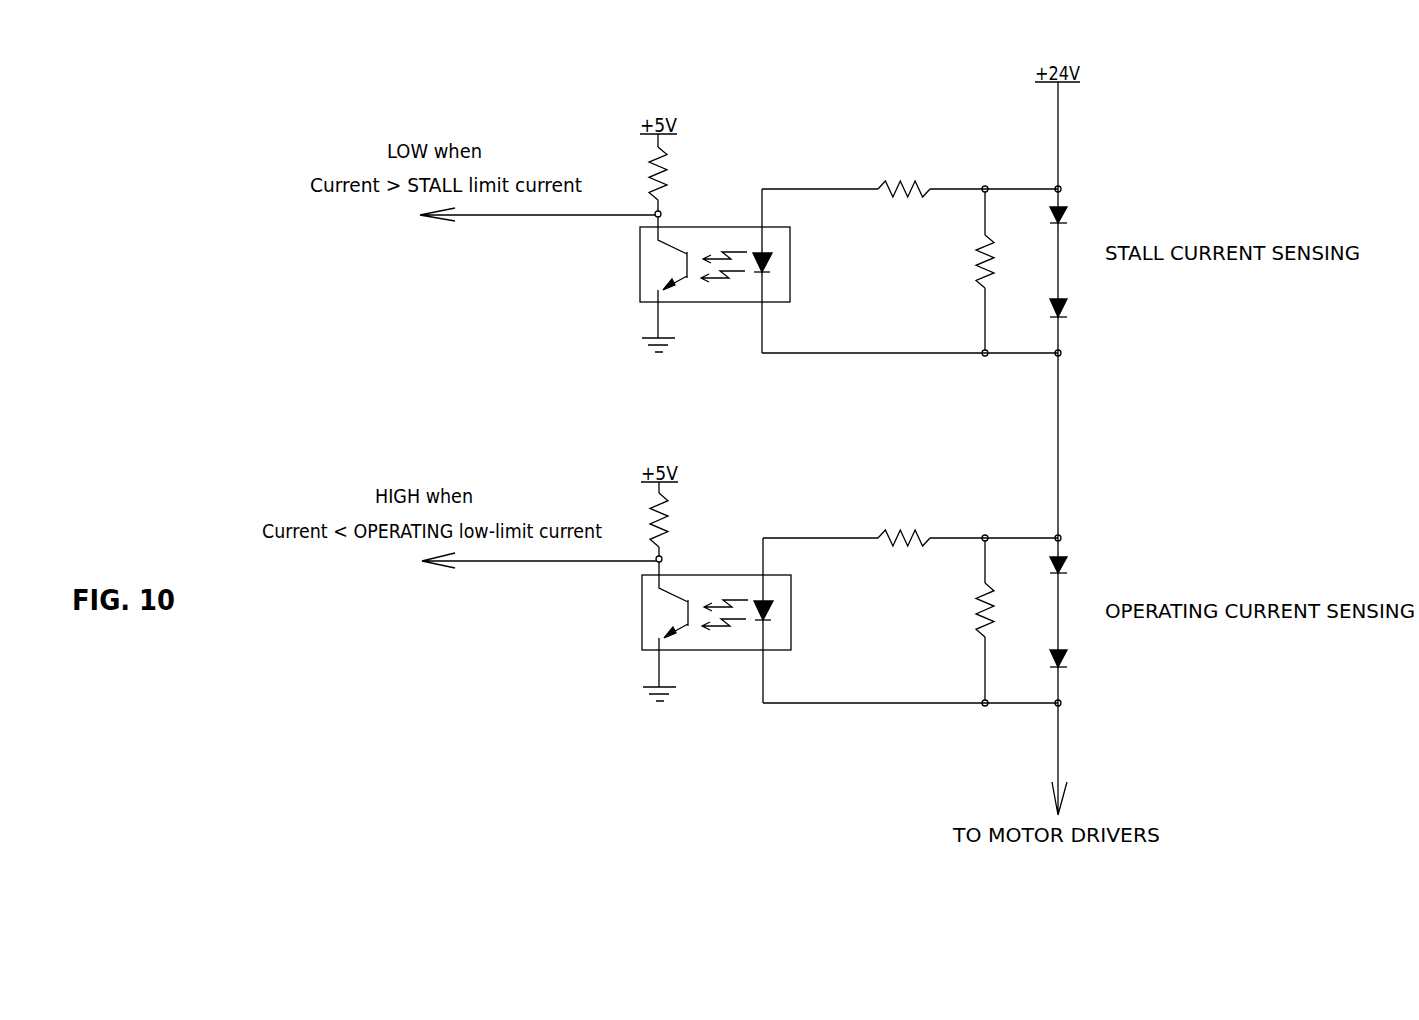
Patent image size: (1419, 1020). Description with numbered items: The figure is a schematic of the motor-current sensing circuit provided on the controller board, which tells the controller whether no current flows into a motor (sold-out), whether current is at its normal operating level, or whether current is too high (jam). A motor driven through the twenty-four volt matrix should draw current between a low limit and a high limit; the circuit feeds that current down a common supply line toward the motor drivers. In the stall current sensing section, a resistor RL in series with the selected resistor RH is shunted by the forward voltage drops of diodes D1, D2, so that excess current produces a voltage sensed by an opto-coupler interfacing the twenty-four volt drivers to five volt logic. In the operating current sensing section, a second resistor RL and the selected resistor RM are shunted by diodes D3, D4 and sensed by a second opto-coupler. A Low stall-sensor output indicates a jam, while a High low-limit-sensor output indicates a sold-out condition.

The load resistor RL is at (904, 353).
The selected resistor RH is at (970, 271).
The selected resistor RM is at (970, 620).
The diode D1 is at (1080, 216).
The diode D2 is at (1080, 310).
The diode D3 is at (1080, 566).
The diode D4 is at (1080, 660).